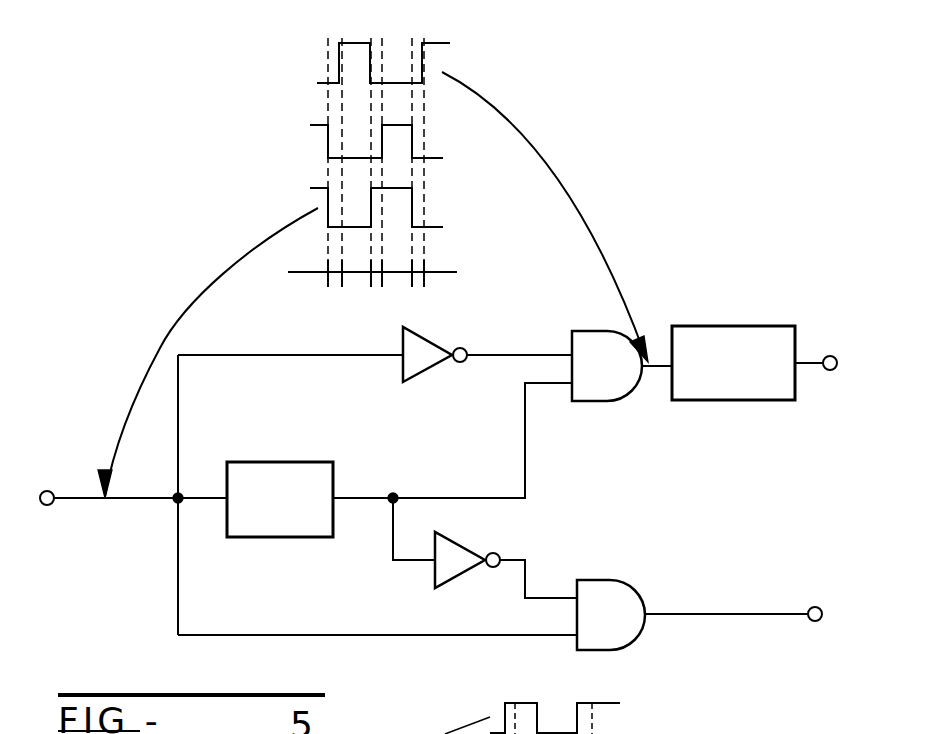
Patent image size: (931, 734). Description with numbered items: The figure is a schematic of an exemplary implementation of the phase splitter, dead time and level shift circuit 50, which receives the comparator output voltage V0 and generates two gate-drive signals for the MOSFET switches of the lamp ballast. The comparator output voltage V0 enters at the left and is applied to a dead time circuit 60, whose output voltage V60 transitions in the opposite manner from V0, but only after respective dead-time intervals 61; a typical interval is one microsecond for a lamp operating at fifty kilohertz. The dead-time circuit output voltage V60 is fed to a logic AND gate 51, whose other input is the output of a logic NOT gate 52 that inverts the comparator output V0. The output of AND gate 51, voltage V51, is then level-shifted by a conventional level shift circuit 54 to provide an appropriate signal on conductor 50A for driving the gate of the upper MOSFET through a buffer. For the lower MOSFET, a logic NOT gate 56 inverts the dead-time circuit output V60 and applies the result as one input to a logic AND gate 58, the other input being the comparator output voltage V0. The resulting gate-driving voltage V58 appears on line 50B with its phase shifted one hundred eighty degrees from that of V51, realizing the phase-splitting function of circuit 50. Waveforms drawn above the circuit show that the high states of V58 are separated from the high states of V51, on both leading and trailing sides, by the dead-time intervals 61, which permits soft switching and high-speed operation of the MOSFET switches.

The phase splitter, dead time & level shift circuit 50 is at (225, 175).
The conductor 50A is at (830, 355).
The line 50B is at (815, 606).
The logic AND gate 51 is at (607, 366).
The logic NOT gate 52 is at (427, 333).
The level shift circuit 54 is at (695, 326).
The logic NOT gate 56 is at (450, 533).
The logic AND gate 58 is at (611, 615).
The dead time circuit 60 is at (243, 462).
The dead-time intervals 61 is at (420, 285).
The comparator output voltage V0 is at (47, 490).
The dead-time circuit output voltage V60 is at (355, 498).
The AND gate output voltage V51 is at (657, 368).
The gate-driving voltage V58 is at (260, 60).